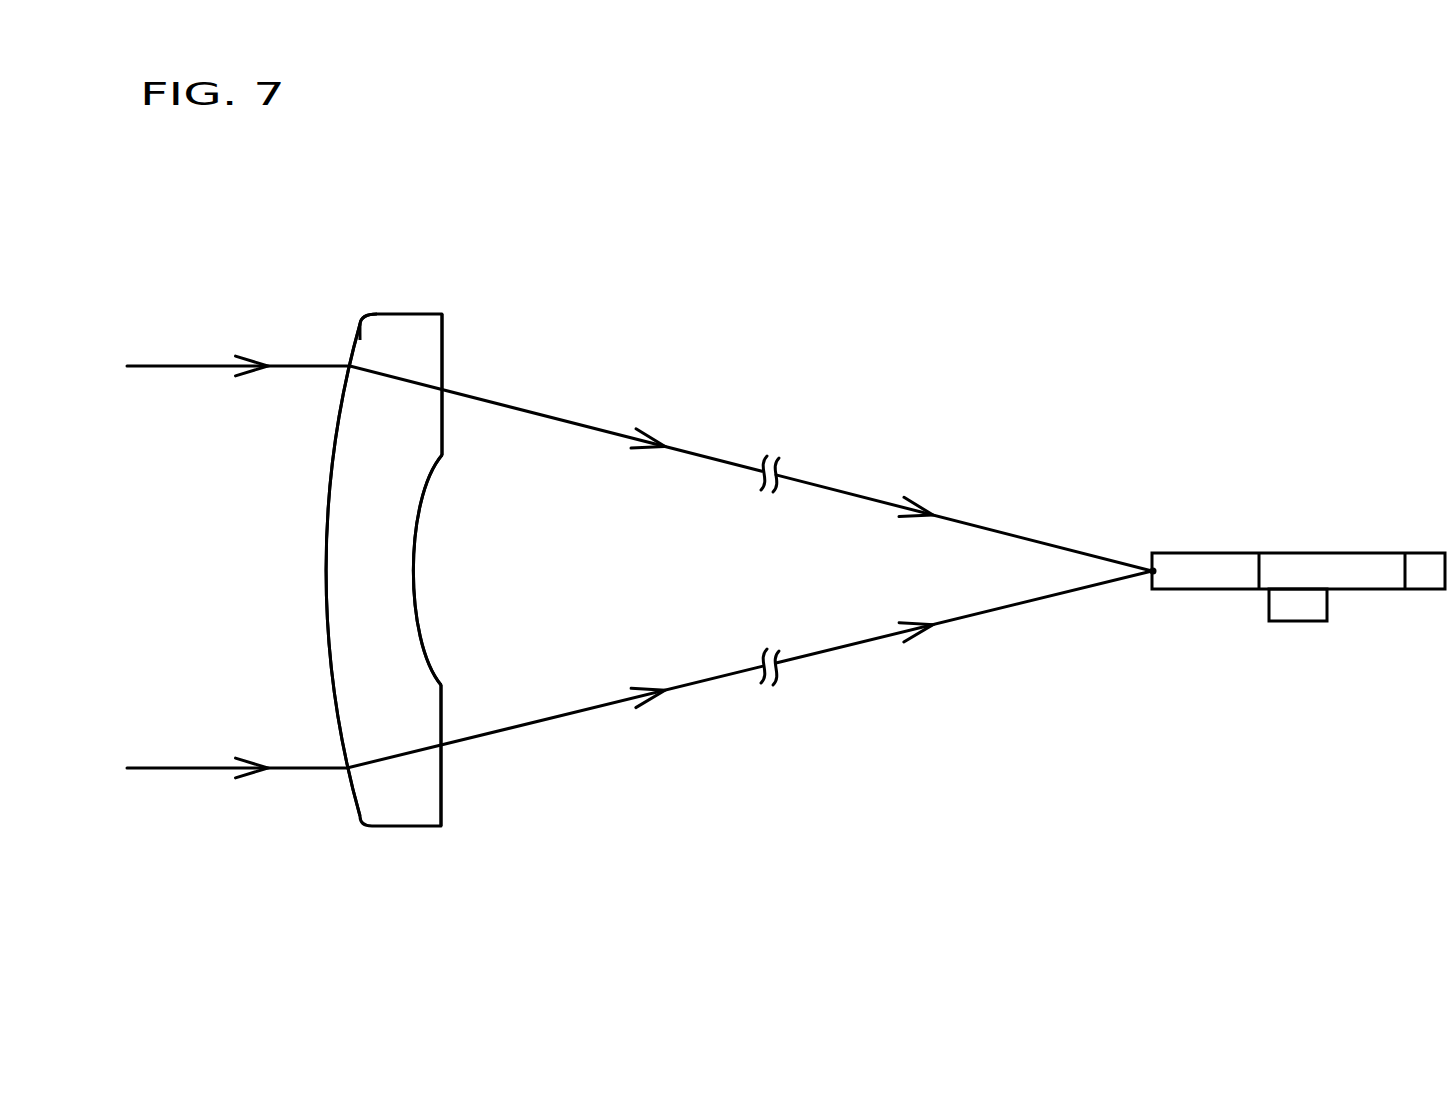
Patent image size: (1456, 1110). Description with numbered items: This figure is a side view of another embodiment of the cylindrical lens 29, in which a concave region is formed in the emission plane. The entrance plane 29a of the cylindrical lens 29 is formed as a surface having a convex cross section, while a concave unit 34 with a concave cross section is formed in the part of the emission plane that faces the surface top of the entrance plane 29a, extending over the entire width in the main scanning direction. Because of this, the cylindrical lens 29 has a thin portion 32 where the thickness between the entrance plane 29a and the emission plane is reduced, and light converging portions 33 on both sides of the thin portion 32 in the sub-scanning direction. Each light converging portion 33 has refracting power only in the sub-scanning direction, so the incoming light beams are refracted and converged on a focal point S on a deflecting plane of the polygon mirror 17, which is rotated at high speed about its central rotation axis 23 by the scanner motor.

The cylindrical lens 29 is at (417, 280).
The entrance plane 29a is at (346, 346).
The thin portion 32 is at (342, 497).
The light converging portions 33 is at (410, 338).
The concave unit 34 is at (481, 586).
The focal point S is at (1149, 574).
The polygon mirror 17 is at (1395, 580).
The rotation axis 23 is at (1293, 610).